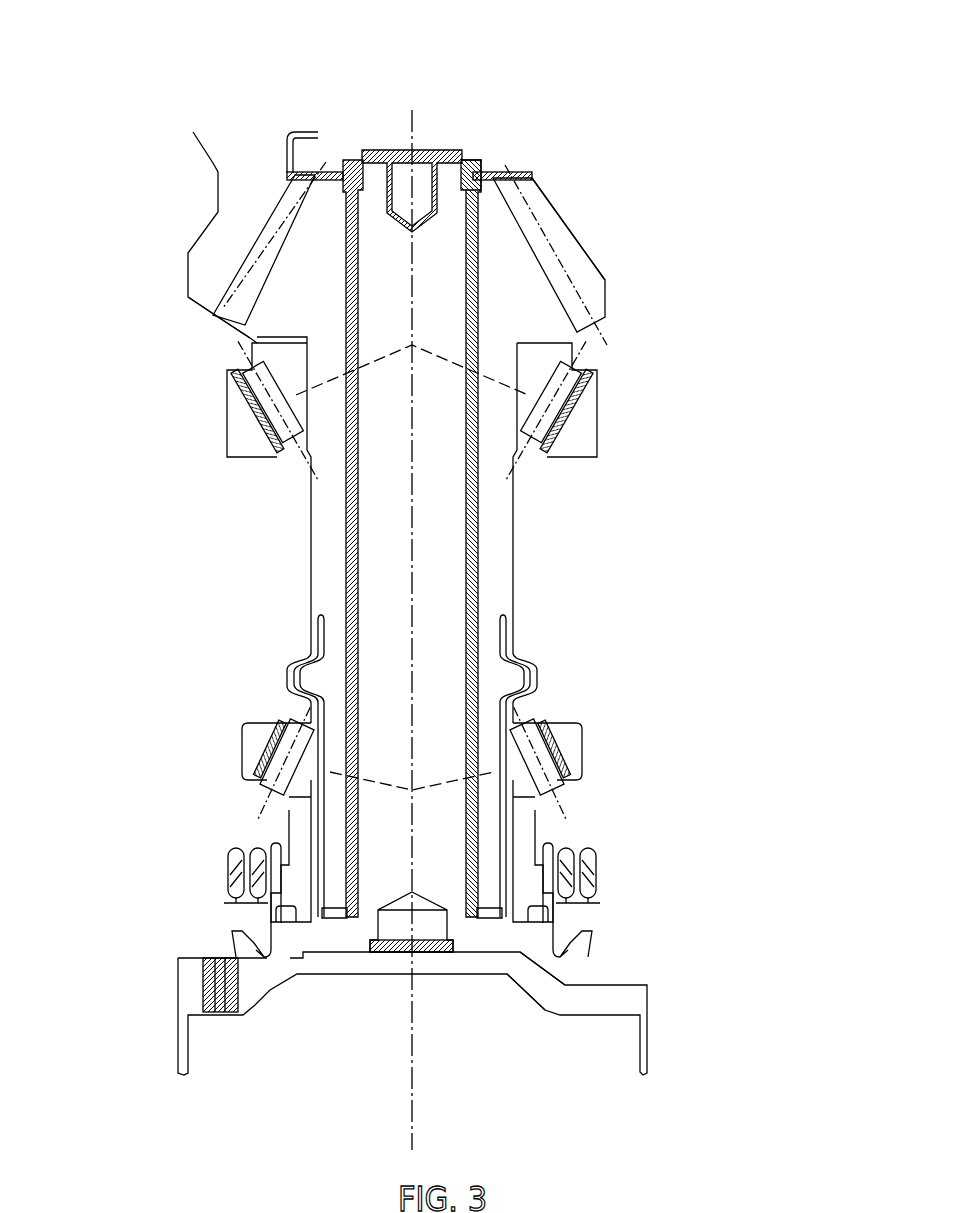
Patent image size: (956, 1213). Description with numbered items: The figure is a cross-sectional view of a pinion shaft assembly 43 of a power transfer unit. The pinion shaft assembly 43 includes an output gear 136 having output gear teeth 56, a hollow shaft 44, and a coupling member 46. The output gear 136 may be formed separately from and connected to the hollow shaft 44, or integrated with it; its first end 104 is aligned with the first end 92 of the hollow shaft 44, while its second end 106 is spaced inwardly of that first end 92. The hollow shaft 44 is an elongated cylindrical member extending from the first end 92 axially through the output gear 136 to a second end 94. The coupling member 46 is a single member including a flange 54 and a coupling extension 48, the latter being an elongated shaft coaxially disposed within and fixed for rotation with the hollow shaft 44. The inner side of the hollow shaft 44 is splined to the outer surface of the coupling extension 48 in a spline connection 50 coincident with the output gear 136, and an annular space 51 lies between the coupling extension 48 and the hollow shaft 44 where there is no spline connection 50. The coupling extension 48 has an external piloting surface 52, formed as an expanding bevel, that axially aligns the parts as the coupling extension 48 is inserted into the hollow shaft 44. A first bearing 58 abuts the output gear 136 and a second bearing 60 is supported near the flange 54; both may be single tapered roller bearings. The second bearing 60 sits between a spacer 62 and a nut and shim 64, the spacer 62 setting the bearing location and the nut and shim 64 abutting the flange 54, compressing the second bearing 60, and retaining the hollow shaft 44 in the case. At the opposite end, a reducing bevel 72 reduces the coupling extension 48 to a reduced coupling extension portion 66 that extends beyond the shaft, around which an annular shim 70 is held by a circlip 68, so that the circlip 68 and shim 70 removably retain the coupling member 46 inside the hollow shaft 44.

The pinion shaft assembly 43 is at (740, 80).
The hollow shaft 44 is at (503, 275).
The coupling member 46 is at (620, 1000).
The coupling extension 48 is at (467, 563).
The spline connection 50 is at (352, 296).
The annular space 51 is at (347, 562).
The external piloting surface 52 is at (350, 873).
The flange 54 is at (507, 978).
The output gear teeth 56 is at (590, 291).
The first bearing 58 is at (600, 415).
The second bearing 60 is at (563, 758).
The spacer 62 is at (290, 684).
The nut and shim 64 is at (540, 830).
The reduced coupling extension portion 66 is at (477, 158).
The circlip 68 is at (287, 152).
The annular shim 70 is at (473, 172).
The reducing bevel 72 is at (420, 152).
The first end 92 is at (395, 148).
The second end 94 is at (337, 923).
The first end of the output gear 104 is at (293, 175).
The second end of the output gear 106 is at (250, 340).
The output gear 136 is at (542, 202).